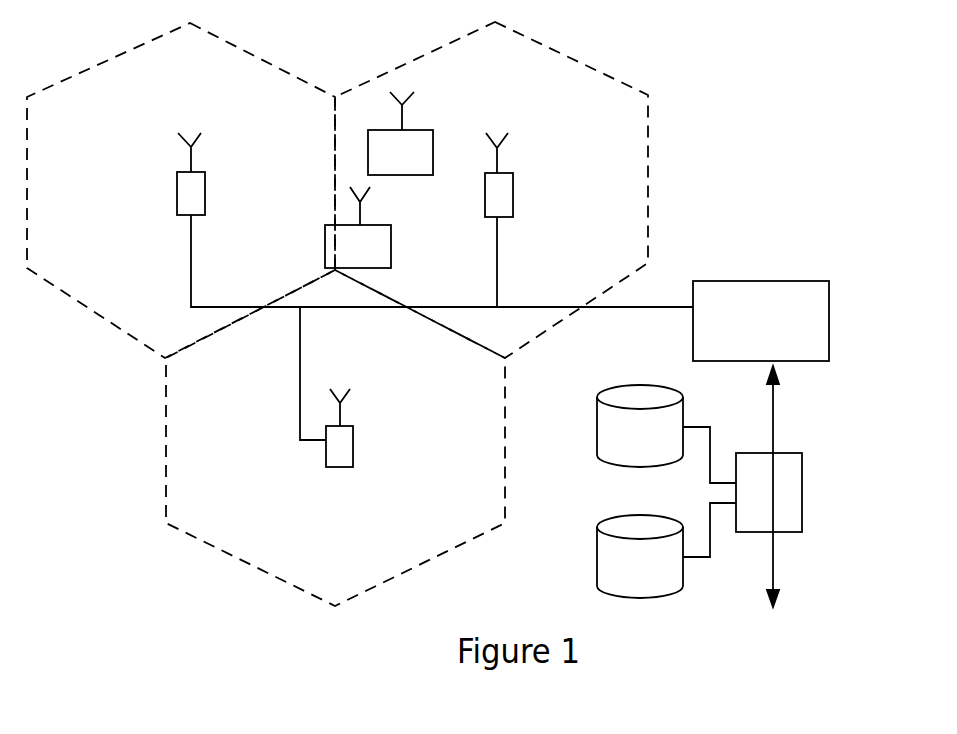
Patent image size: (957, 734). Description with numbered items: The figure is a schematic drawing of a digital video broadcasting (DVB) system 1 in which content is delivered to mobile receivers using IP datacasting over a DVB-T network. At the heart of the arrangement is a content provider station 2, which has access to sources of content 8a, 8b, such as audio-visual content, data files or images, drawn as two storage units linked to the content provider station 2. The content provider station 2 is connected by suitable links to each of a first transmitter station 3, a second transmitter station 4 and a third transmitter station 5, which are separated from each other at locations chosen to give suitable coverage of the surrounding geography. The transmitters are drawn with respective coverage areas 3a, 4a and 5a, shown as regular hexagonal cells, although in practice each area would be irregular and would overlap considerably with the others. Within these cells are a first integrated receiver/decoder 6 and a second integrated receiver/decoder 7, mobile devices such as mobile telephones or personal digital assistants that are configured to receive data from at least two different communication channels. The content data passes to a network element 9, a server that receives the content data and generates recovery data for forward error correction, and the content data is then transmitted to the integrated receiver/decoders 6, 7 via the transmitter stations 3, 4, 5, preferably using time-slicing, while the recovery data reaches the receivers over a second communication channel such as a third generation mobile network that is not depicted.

The digital video broadcasting system 1 is at (190, 661).
The content provider station 2 is at (802, 477).
The first transmitter station 3 is at (175, 185).
The coverage area 3a is at (133, 337).
The second transmitter station 4 is at (353, 450).
The coverage area 4a is at (205, 545).
The third transmitter station 5 is at (513, 203).
The coverage area 5a is at (648, 128).
The first integrated receiver/decoder 6 is at (433, 130).
The second integrated receiver/decoder 7 is at (391, 230).
The source of content 8a is at (597, 451).
The source of content 8b is at (597, 560).
The network element 9 is at (787, 281).